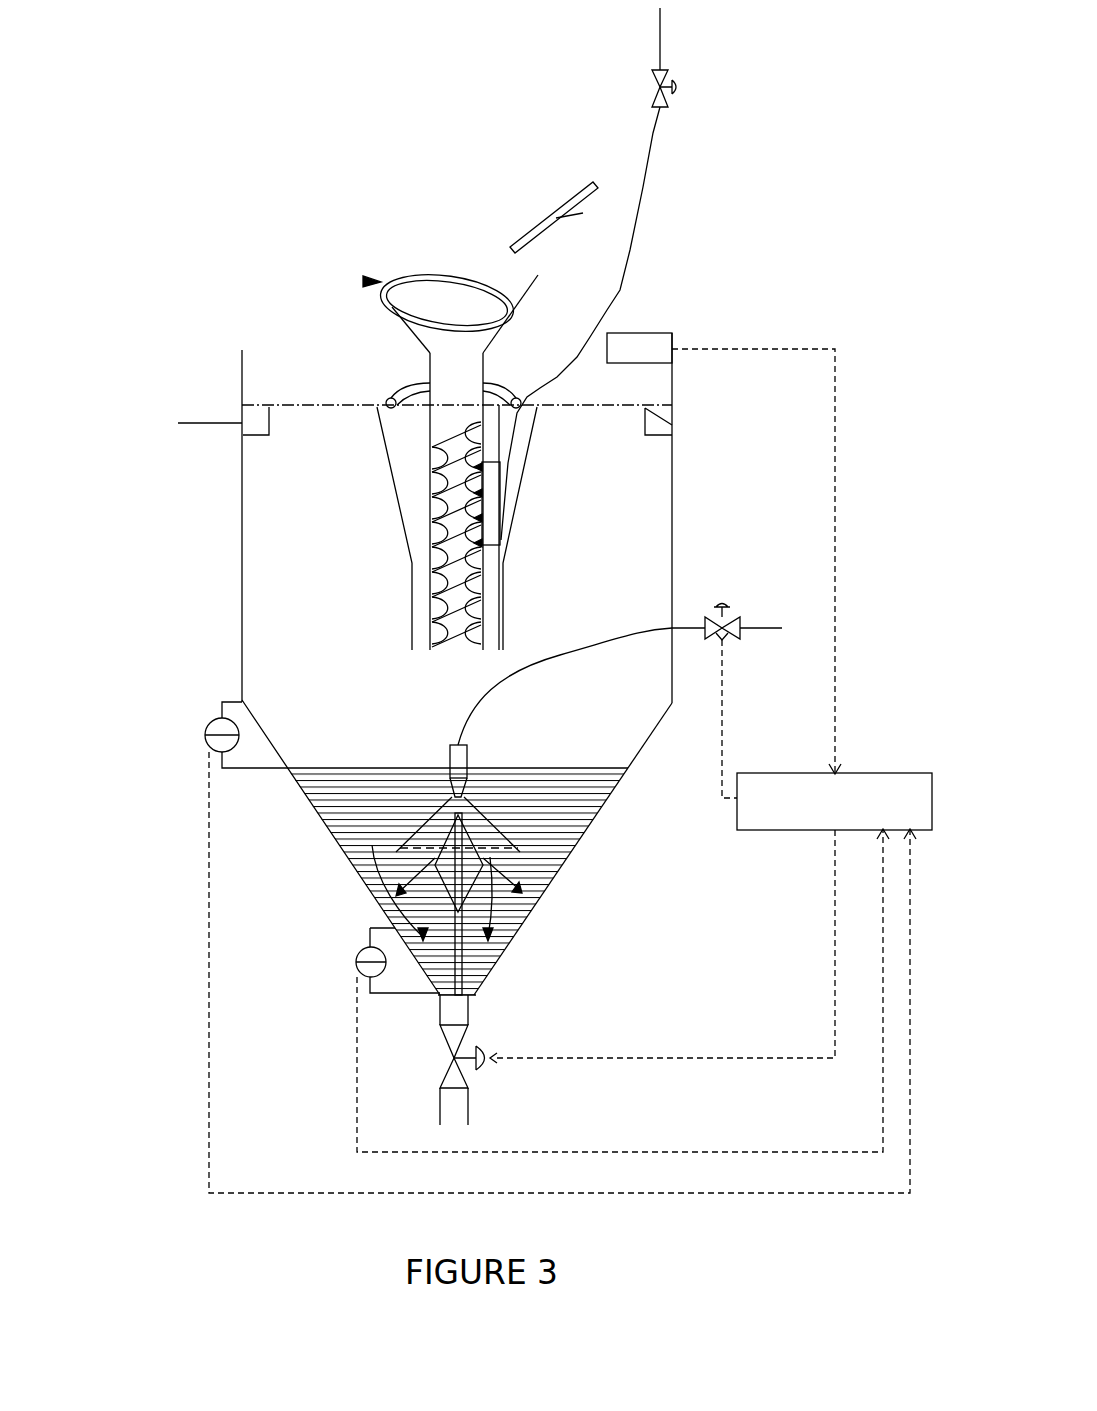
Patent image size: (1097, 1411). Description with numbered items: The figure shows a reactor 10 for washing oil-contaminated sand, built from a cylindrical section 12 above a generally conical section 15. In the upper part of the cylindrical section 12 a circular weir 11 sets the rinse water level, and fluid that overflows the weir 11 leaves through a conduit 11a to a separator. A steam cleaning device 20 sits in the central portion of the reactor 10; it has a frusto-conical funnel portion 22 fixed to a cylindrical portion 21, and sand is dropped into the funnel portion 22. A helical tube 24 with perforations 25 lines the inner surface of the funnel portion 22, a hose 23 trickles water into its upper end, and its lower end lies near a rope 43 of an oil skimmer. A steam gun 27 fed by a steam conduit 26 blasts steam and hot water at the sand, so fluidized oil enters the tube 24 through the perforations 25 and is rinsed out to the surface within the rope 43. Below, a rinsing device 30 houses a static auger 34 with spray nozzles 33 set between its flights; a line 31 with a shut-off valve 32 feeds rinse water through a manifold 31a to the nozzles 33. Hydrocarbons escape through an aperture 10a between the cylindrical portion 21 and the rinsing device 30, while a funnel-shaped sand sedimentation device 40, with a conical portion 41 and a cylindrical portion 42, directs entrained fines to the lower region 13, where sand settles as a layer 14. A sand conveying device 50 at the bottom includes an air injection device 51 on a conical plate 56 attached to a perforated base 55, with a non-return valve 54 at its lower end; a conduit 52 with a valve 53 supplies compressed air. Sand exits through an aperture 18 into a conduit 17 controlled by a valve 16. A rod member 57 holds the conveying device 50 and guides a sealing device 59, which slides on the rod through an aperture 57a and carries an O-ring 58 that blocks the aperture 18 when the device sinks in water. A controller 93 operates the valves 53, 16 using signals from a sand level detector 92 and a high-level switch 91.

The reactor 10 is at (240, 352).
The aperture 10a is at (535, 410).
The circular weir 11 is at (672, 425).
The conduit 11a is at (207, 425).
The cylindrical section 12 is at (672, 477).
The lower region 13 is at (557, 716).
The layer 14 is at (562, 853).
The conical section 15 is at (515, 932).
The valve 16 is at (468, 1037).
The conduit 17 is at (470, 1108).
The aperture 18 is at (440, 1017).
The steam cleaning device 20 is at (538, 275).
The cylindrical portion 21 is at (430, 377).
The funnel portion 22 is at (418, 330).
The hose 23 is at (364, 281).
The tube 24 is at (400, 282).
The perforations 25 is at (395, 292).
The steam conduit 26 is at (598, 183).
The steam gun 27 is at (583, 213).
The rinsing device 30 is at (430, 420).
The line 31 is at (658, 42).
The manifold 31a is at (483, 492).
The shut-off valve 32 is at (673, 87).
The spray nozzles 33 is at (485, 545).
The static auger 34 is at (463, 607).
The sand sedimentation device 40 is at (377, 407).
The conical portion 41 is at (430, 483).
The cylindrical portion 42 is at (413, 598).
The rope 43 is at (386, 400).
The sand conveying device 50 is at (312, 803).
The air injection device 51 is at (450, 742).
The conduit 52 is at (637, 627).
The valve 53 is at (743, 618).
The non-return valve 54 is at (453, 790).
The base 55 is at (485, 840).
The conical plate 56 is at (437, 833).
The rod member 57 is at (473, 990).
The aperture 57a is at (368, 923).
The O-ring 58 is at (435, 858).
The sealing device 59 is at (372, 858).
The high-level switch 91 is at (205, 735).
The sand level detector 92 is at (637, 333).
The controller 93 is at (860, 773).